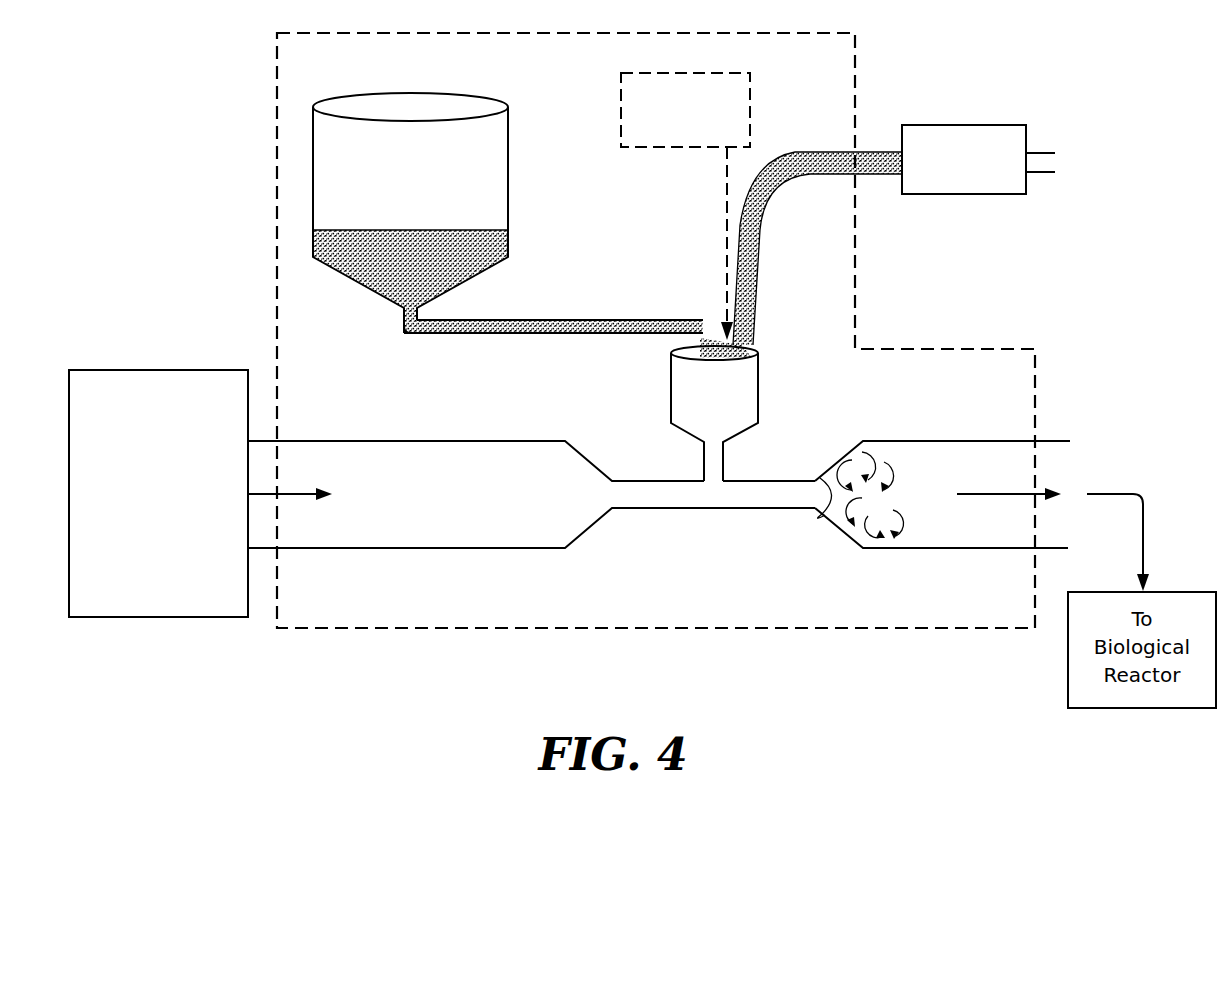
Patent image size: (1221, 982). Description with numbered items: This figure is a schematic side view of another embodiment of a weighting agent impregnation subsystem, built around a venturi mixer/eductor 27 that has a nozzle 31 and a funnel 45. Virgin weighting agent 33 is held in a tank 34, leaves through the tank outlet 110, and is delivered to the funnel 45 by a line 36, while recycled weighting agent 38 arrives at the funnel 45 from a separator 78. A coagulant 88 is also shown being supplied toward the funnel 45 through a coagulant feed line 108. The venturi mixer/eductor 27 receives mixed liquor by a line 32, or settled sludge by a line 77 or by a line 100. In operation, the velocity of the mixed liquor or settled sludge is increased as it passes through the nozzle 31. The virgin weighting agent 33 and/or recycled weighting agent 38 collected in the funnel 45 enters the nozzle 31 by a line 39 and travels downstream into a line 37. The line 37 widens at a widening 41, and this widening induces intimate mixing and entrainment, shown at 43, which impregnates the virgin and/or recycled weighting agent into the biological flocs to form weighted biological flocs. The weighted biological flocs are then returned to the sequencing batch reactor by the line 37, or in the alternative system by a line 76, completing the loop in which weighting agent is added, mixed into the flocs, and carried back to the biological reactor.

The tank 34 is at (410, 213).
The virgin weighting agent 33 is at (508, 250).
The line 36 is at (608, 320).
The tank outlet 110 is at (383, 317).
The coagulant source 88 is at (685, 110).
The coagulant feed line 108 is at (727, 183).
The recycled weighting agent 38 is at (762, 213).
The separator 78 is at (978, 159).
The funnel 45 is at (714, 413).
The line 39 is at (700, 464).
The line 32 is at (442, 493).
The line 77 is at (442, 493).
The line 100 is at (443, 440).
The nozzle 31 is at (717, 520).
The line 37 is at (942, 466).
The line 76 is at (923, 440).
The widening of line 41 is at (838, 514).
The intimate mixing and entrainment 43 is at (907, 478).
The venturi mixer/eductor 27 is at (465, 583).